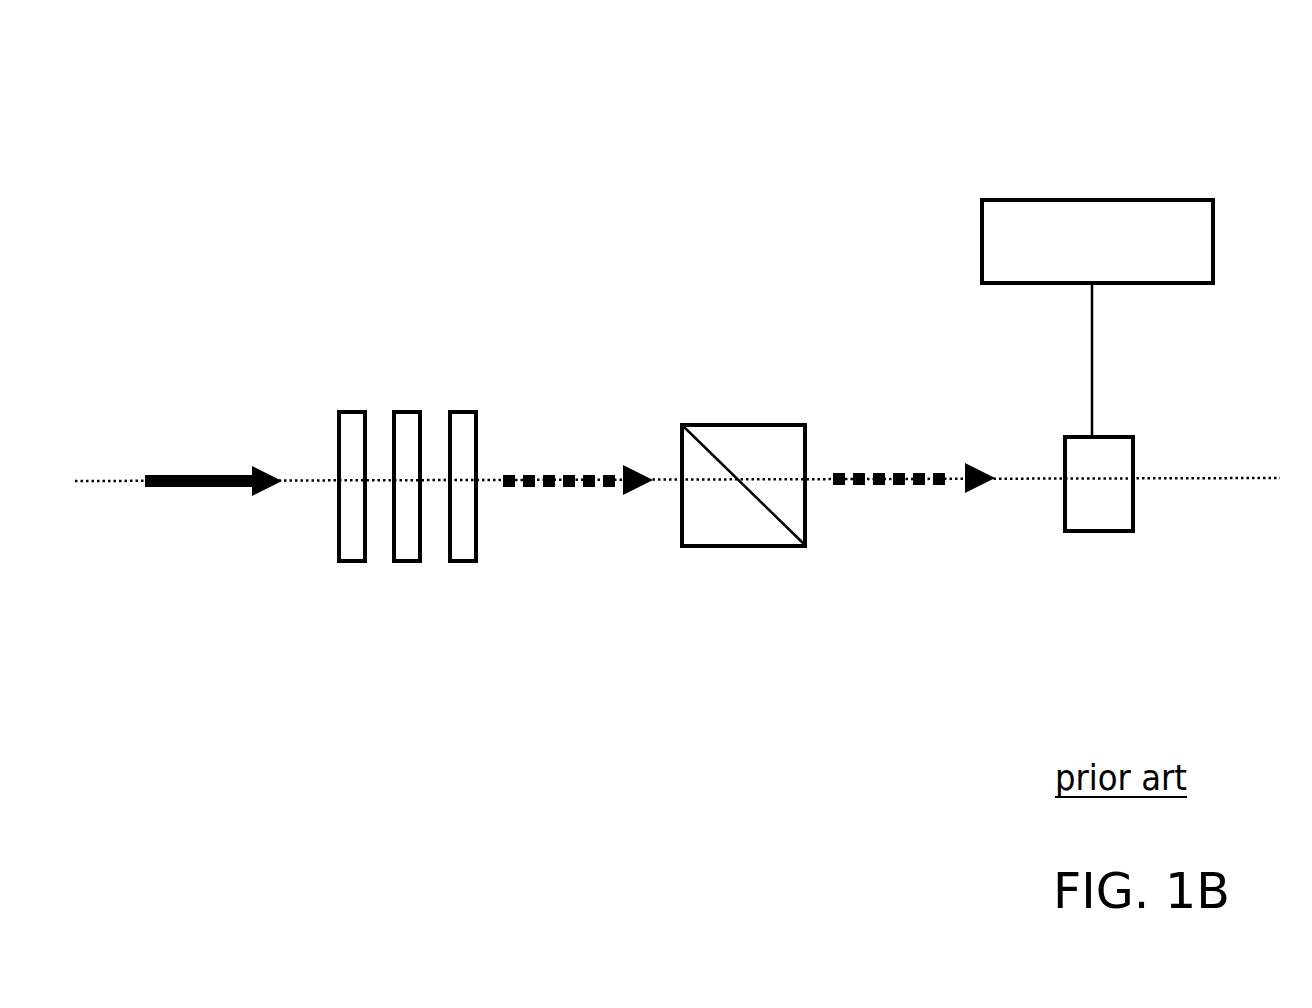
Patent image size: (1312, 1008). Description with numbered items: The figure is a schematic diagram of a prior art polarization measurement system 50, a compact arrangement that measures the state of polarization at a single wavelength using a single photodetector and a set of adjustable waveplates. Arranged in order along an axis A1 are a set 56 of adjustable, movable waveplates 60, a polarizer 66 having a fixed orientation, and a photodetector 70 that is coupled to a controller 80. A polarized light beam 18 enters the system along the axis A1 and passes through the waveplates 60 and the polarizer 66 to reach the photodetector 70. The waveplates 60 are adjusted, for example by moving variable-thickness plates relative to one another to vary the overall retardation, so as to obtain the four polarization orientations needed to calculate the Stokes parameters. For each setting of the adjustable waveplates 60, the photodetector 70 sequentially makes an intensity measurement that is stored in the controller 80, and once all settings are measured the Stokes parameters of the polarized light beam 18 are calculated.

The polarization measurement system 50 is at (372, 138).
The polarized light beam 18 is at (208, 473).
The set of adjustable waveplates 56 is at (407, 459).
The waveplate 60 is at (352, 563).
The polarizer 66 is at (748, 423).
The photodetector 70 is at (1135, 478).
The controller 80 is at (980, 238).
The axis A1 is at (1212, 478).